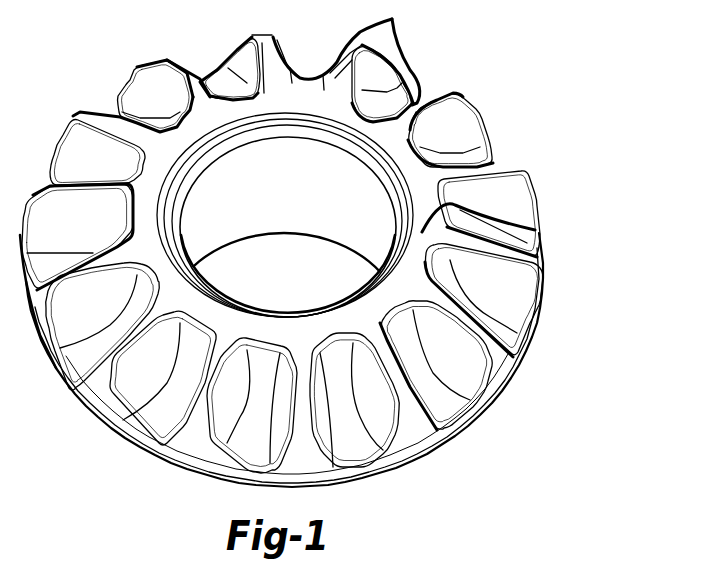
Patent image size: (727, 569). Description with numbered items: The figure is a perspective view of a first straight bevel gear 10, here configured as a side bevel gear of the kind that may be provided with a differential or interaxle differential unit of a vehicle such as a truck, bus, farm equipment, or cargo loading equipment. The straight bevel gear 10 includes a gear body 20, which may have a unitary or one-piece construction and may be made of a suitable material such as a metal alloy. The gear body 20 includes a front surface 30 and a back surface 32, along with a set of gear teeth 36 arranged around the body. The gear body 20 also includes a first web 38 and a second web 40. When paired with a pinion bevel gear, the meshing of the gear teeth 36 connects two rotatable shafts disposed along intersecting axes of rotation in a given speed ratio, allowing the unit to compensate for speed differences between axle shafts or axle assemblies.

The straight bevel gear 10 is at (510, 112).
The gear body 20 is at (326, 478).
The front surface 30 is at (533, 230).
The back surface 32 is at (301, 233).
The set of gear teeth 36 is at (253, 37).
The first web 38 is at (393, 20).
The second web 40 is at (257, 467).